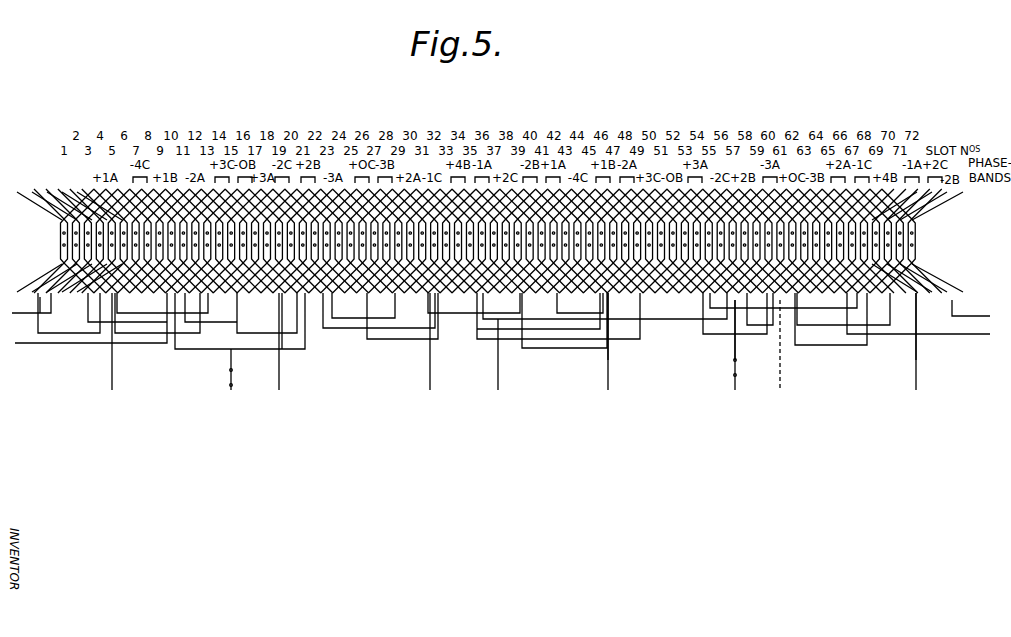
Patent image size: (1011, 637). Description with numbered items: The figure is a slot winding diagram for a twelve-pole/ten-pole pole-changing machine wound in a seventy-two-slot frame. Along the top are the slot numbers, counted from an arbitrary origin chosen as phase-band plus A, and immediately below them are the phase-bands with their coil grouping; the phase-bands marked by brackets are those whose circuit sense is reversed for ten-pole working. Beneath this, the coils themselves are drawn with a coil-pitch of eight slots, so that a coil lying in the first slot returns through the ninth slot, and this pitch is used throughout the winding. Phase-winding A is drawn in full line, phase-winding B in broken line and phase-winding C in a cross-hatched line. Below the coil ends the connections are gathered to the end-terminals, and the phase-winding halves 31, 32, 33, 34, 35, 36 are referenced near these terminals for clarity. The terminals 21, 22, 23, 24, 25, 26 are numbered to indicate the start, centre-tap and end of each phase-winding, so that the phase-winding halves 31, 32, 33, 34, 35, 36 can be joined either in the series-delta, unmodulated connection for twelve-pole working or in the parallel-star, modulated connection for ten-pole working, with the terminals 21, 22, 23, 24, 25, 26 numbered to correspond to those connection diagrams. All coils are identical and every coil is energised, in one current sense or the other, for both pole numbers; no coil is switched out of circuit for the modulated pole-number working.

The terminal 21 is at (618, 386).
The terminal 22 is at (498, 388).
The terminal 23 is at (904, 386).
The terminal 24 is at (231, 388).
The terminal 25 is at (745, 386).
The terminal 26 is at (780, 388).
The phase-winding half 31 is at (112, 360).
The phase-winding half 32 is at (916, 360).
The phase-winding half 33 is at (735, 360).
The phase-winding half 34 is at (608, 360).
The phase-winding half 35 is at (430, 360).
The phase-winding half 36 is at (279, 360).